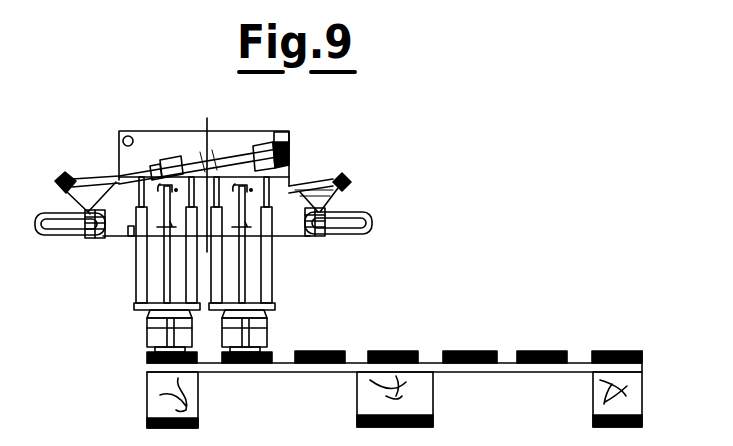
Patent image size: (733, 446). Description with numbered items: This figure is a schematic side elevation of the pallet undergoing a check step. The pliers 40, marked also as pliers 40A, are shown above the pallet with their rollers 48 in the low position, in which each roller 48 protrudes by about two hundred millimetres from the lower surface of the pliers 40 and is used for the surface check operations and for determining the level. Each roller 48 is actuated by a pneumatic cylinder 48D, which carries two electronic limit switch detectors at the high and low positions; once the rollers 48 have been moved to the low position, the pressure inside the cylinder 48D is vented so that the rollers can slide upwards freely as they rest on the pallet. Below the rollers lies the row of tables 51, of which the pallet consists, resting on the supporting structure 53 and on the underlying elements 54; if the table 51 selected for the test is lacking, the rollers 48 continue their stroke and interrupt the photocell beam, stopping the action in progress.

The pliers 40 is at (175, 126).
The transfer device actuator 40A is at (204, 163).
The pneumatic cylinder 48D is at (245, 277).
The rollers 48 is at (235, 343).
The tables 51 is at (462, 352).
The conveyor platform 53 is at (580, 352).
The containers 54 is at (198, 426).